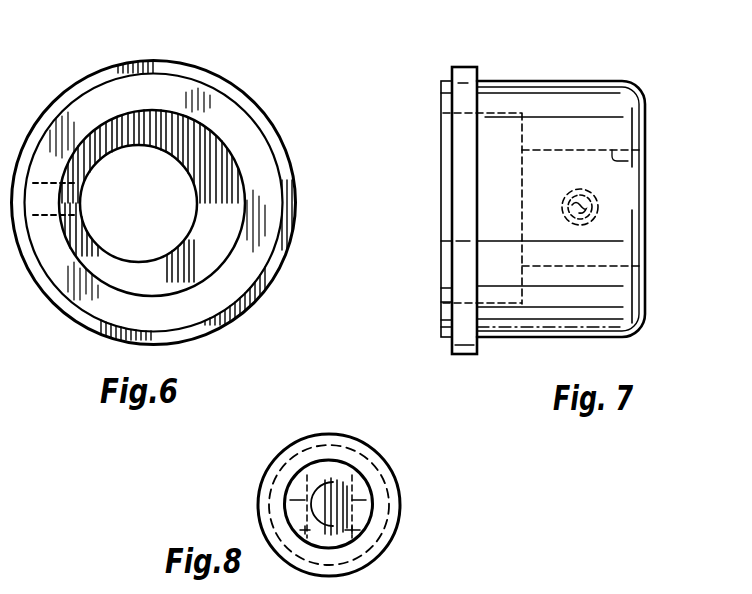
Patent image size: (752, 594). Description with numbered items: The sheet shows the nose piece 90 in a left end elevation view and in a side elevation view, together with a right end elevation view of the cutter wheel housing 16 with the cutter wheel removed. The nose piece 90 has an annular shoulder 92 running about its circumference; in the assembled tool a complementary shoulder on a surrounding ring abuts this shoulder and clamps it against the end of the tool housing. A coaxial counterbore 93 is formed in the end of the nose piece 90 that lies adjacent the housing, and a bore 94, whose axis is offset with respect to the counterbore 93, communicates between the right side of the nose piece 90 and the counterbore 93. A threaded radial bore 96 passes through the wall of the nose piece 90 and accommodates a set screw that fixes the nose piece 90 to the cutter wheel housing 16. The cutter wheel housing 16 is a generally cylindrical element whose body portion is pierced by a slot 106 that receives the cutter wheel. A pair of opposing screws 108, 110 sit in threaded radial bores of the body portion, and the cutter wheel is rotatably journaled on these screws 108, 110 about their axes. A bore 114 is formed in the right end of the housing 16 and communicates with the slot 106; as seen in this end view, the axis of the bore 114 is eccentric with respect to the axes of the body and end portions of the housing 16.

In FIG. 6, the nose piece 90 is at (243, 73).
In FIG. 7, the nose piece 90 is at (582, 74).
In FIG. 6, the annular shoulder 92 is at (88, 85).
In FIG. 7, the annular shoulder 92 is at (460, 64).
In FIG. 6, the coaxial counterbore 93 is at (219, 263).
In FIG. 7, the coaxial counterbore 93 is at (464, 124).
In FIG. 6, the bore 94 is at (189, 197).
In FIG. 7, the bore 94 is at (640, 164).
In FIG. 6, the threaded radial bore 96 is at (72, 214).
In FIG. 7, the threaded radial bore 96 is at (567, 220).
In FIG. 8, the cutter wheel housing 16 is at (248, 486).
In FIG. 8, the slot 106 is at (324, 468).
In FIG. 8, the screw 108 is at (392, 538).
In FIG. 8, the screw 110 is at (300, 518).
In FIG. 8, the bore 114 is at (358, 493).